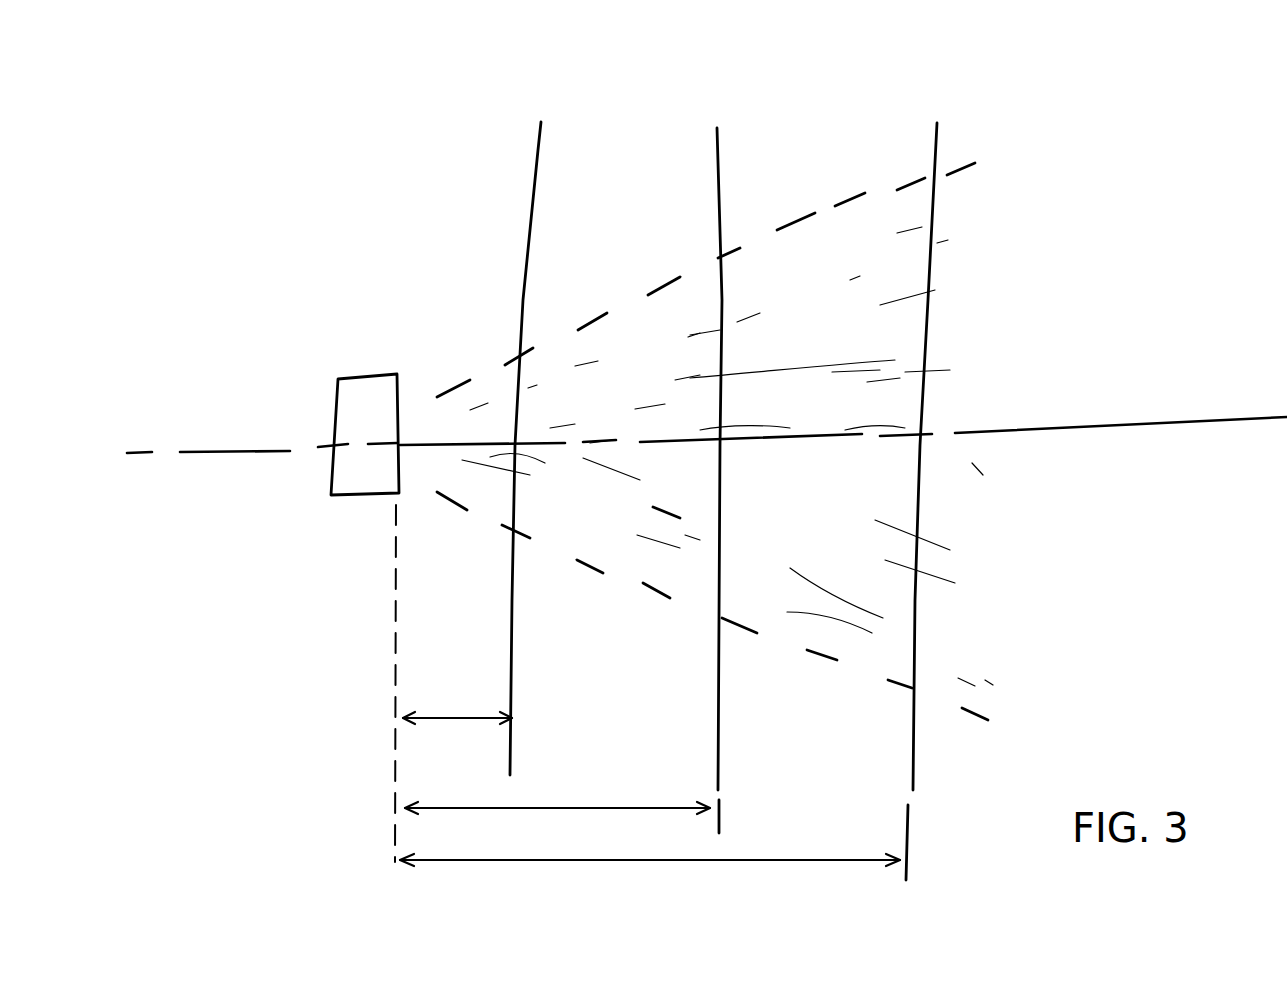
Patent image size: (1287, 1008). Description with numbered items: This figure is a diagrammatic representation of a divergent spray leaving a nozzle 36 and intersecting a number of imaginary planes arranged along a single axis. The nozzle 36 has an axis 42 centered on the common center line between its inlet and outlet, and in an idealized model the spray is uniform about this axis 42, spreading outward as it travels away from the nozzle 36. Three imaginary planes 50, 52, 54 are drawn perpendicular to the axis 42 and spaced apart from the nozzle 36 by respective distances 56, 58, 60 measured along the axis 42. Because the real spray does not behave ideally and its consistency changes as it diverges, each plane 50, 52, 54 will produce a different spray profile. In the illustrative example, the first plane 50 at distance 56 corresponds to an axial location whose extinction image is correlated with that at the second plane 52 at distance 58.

The nozzle 36 is at (365, 497).
The axis 42 is at (1127, 425).
The imaginary plane 50 is at (540, 158).
The imaginary plane 52 is at (720, 150).
The imaginary plane 54 is at (940, 142).
The distance 56 is at (450, 712).
The distance 58 is at (538, 805).
The distance 60 is at (648, 862).